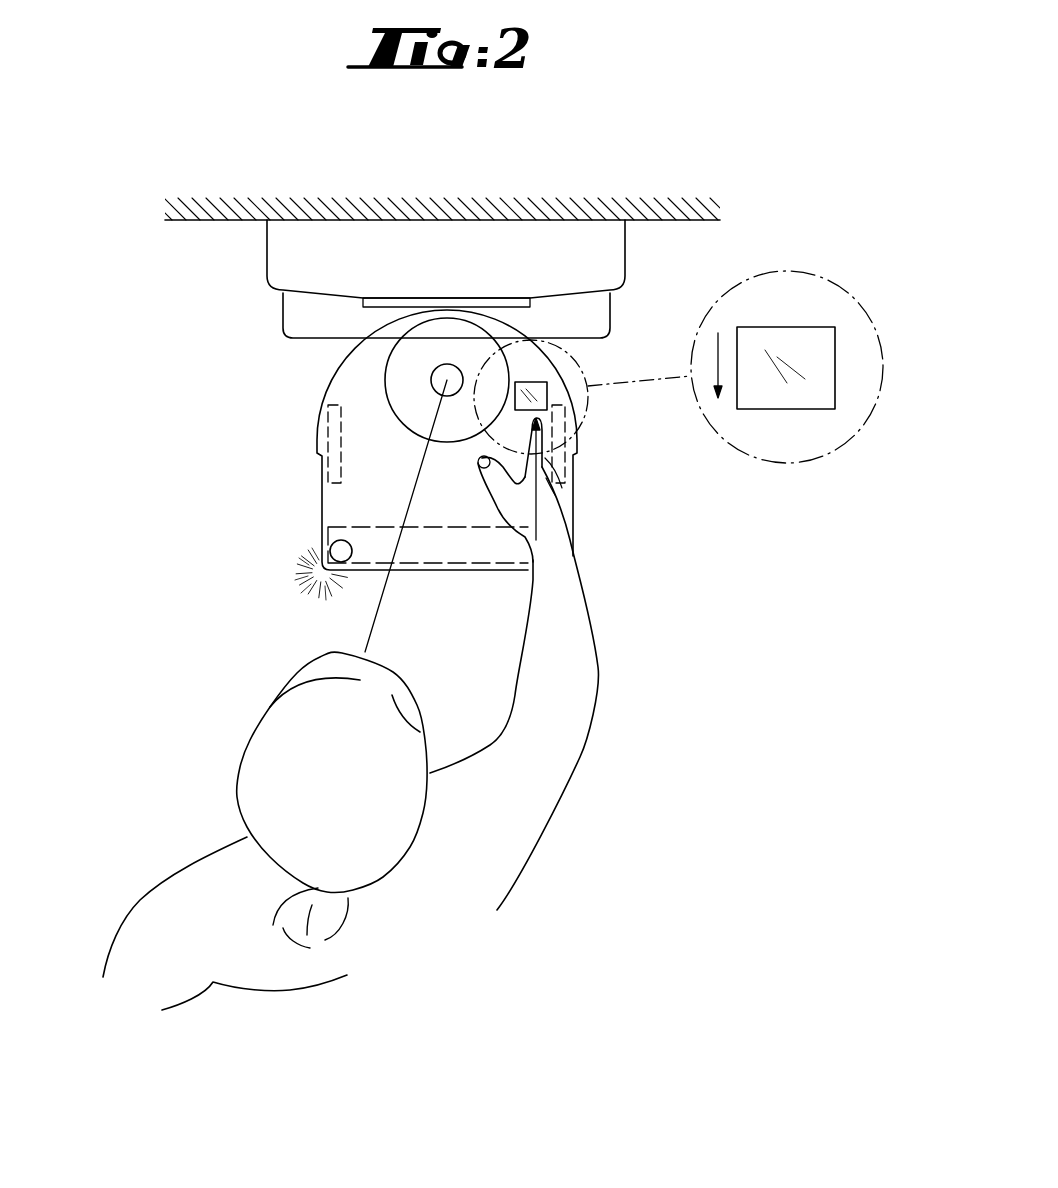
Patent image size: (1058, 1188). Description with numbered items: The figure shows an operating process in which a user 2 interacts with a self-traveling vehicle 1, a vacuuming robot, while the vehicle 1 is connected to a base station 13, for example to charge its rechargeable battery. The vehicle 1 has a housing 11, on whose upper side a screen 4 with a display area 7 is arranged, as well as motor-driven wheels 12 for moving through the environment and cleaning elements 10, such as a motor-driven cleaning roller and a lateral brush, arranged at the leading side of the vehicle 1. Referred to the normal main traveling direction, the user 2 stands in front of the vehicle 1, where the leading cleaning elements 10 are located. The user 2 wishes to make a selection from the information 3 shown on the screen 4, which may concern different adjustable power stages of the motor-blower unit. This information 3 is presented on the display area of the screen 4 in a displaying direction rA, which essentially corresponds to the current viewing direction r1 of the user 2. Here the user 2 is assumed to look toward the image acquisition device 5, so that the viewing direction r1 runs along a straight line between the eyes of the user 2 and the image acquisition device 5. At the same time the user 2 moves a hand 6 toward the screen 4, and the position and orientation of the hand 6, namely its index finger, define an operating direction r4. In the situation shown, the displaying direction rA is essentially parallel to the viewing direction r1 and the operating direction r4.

The vehicle 1 is at (688, 553).
The user 2 is at (490, 822).
The information 3 is at (808, 330).
The screen 4 is at (540, 381).
The image acquisition device 5 is at (440, 378).
The hand 6 is at (553, 517).
The display area 7 is at (548, 396).
The cleaning elements 10 is at (305, 571).
The housing 11 is at (322, 492).
The wheels 12 is at (328, 430).
The base station 13 is at (295, 257).
The viewing direction r1 is at (380, 612).
The operating direction r4 is at (538, 502).
The displaying direction rA is at (718, 352).